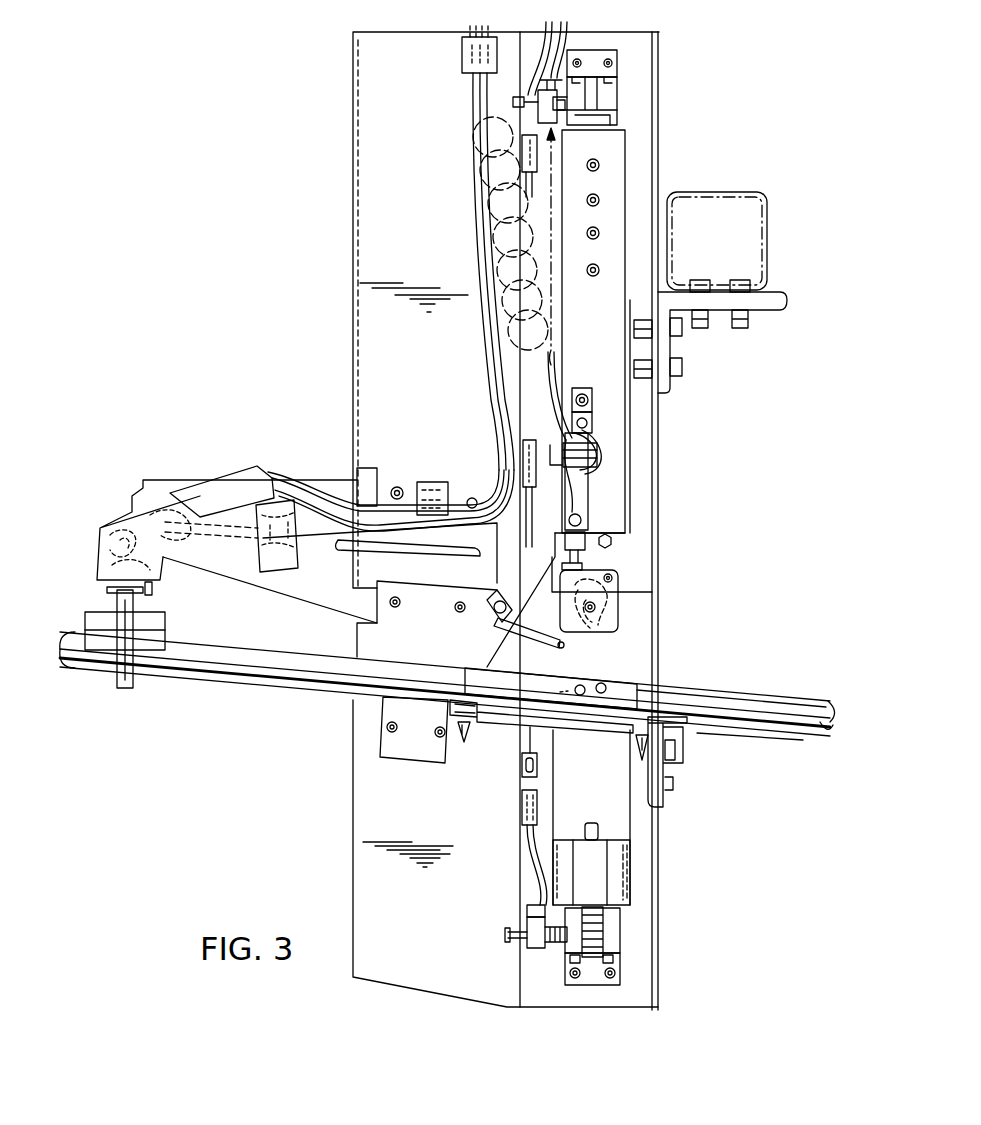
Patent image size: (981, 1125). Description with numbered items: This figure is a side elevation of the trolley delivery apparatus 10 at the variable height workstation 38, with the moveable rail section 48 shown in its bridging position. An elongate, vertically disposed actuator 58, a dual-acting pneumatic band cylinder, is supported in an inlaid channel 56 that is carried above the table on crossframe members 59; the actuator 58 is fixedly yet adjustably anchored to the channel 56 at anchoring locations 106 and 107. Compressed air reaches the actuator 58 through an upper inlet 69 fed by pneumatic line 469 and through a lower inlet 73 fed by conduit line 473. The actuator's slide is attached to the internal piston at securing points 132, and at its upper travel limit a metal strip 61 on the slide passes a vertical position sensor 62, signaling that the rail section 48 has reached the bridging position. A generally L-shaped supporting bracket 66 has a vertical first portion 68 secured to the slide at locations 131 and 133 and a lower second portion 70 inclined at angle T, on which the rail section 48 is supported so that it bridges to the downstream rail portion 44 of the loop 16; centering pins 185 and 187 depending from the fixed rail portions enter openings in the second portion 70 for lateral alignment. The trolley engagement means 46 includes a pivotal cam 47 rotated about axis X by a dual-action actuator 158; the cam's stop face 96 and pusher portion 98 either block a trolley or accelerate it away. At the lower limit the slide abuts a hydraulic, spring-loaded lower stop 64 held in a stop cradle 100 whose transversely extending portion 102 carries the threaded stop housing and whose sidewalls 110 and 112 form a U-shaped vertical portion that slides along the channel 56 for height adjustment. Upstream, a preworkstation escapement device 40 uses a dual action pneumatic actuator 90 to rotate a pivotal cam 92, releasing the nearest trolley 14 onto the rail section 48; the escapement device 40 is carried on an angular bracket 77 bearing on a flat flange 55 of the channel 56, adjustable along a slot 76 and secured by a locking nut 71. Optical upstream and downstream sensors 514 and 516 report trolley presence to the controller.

The trolley delivery apparatus 10 is at (385, 129).
The variable height workstation 38 is at (292, 836).
The upper inlet 69 is at (530, 60).
The pneumatic line 469 is at (562, 58).
The actuator 58 is at (632, 92).
The anchoring location 106 is at (603, 60).
The vertical position sensor 62 is at (603, 92).
The metal strip 61 is at (592, 114).
The channel 56 is at (647, 153).
The securing points 132 is at (600, 233).
The crossframe members 59 is at (767, 223).
The dual-action actuator 158 is at (595, 485).
The trolley engagement means 46 is at (592, 538).
The securing location 131 is at (598, 541).
The stop face 96 is at (603, 622).
The axis X is at (596, 607).
The pivotal cam 47 is at (513, 607).
The pusher portion 98 is at (545, 641).
The supporting bracket 66 is at (493, 665).
The first portion 68 is at (617, 651).
The securing location 133 is at (612, 688).
The angle T is at (308, 707).
The moveable rail section 48 is at (523, 684).
The downstream rail portion 44 is at (755, 718).
The second portion 70 is at (582, 718).
The centering pin 185 is at (465, 728).
The centering pin 187 is at (637, 745).
The downstream sensor 516 is at (683, 752).
The upstream sensor 514 is at (522, 763).
The conduit line 473 is at (528, 875).
The lower inlet 73 is at (527, 909).
The stop cradle 100 is at (630, 861).
The sidewall 110 is at (566, 840).
The transversely extending portion 102 is at (620, 882).
The sidewall 112 is at (623, 867).
The lower stop 64 is at (604, 932).
The anchoring location 107 is at (613, 972).
The preworkstation escapement device 40 is at (221, 567).
The dual action pneumatic actuator 90 is at (223, 491).
The locking nut 71 is at (293, 568).
The pivotal cam 92 is at (149, 584).
The trolley 14 is at (166, 622).
The loop 16 is at (330, 583).
The angular bracket 77 is at (243, 557).
The slot 76 is at (338, 547).
The flat flange 55 is at (317, 488).